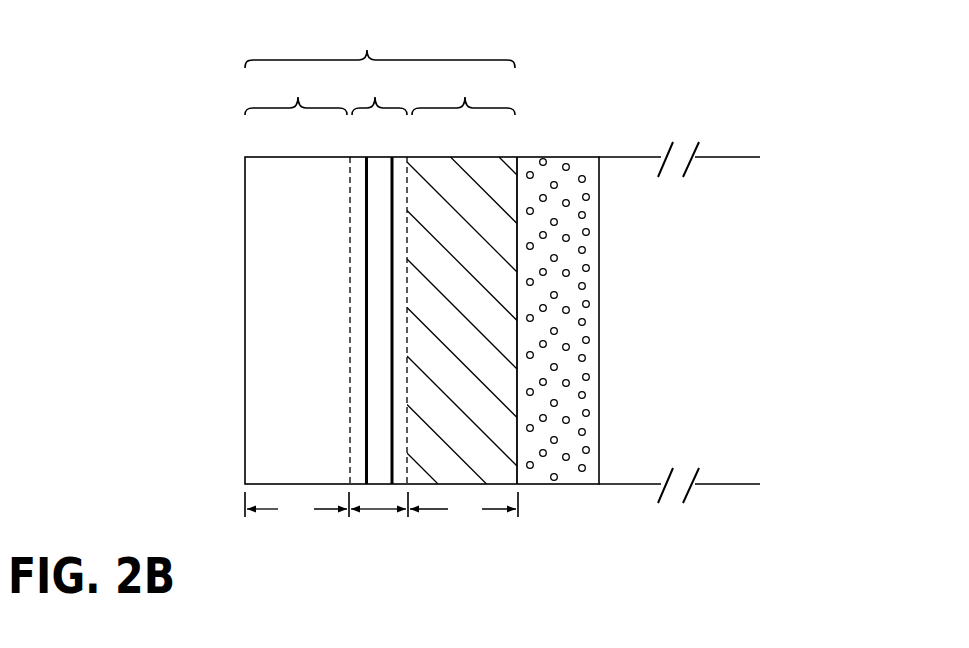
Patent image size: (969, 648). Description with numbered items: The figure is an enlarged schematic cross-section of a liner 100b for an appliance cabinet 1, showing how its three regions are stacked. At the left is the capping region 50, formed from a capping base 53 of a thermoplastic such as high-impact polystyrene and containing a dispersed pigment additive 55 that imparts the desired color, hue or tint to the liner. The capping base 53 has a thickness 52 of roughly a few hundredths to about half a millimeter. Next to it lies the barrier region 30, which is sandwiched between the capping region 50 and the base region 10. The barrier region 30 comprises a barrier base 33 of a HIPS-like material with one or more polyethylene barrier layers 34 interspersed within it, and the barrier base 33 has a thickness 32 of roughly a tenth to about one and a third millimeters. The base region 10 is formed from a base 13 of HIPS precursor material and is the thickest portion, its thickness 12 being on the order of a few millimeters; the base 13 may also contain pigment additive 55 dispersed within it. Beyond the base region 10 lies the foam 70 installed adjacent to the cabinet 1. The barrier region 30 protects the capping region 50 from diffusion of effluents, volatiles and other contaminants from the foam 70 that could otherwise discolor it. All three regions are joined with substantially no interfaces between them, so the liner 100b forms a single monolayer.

The cabinet 1 is at (673, 281).
The liner 100b is at (380, 44).
The capping region 50 is at (297, 277).
The barrier region 30 is at (379, 93).
The base region 10 is at (462, 277).
The barrier base 33 is at (357, 180).
The barrier layers 34 is at (391, 183).
The base 13 is at (483, 185).
The pigment additive 55 is at (445, 183).
The capping base 53 is at (260, 200).
The foam 70 is at (552, 172).
The thickness 52 is at (297, 507).
The thickness 32 is at (378, 512).
The thickness 12 is at (463, 507).